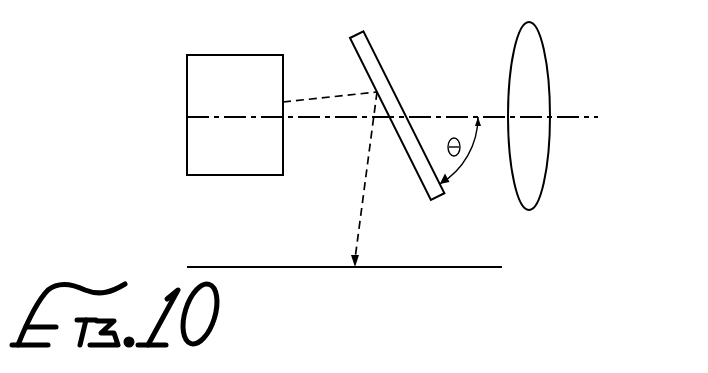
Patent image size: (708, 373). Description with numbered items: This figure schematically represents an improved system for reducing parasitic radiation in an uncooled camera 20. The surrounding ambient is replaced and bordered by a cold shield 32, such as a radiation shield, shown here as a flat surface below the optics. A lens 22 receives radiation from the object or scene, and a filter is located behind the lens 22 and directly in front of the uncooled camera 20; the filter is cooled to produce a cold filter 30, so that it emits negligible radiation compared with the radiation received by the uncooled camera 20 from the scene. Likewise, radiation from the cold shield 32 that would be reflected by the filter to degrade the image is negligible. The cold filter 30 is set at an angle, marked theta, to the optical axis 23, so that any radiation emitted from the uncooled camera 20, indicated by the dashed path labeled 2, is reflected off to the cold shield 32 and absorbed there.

The uncooled camera 20 is at (224, 97).
The cold filter 30 is at (376, 52).
The lens 22 is at (545, 52).
The optical axis 23 is at (590, 115).
The light beam 2 is at (350, 191).
The cold shield 32 is at (422, 267).